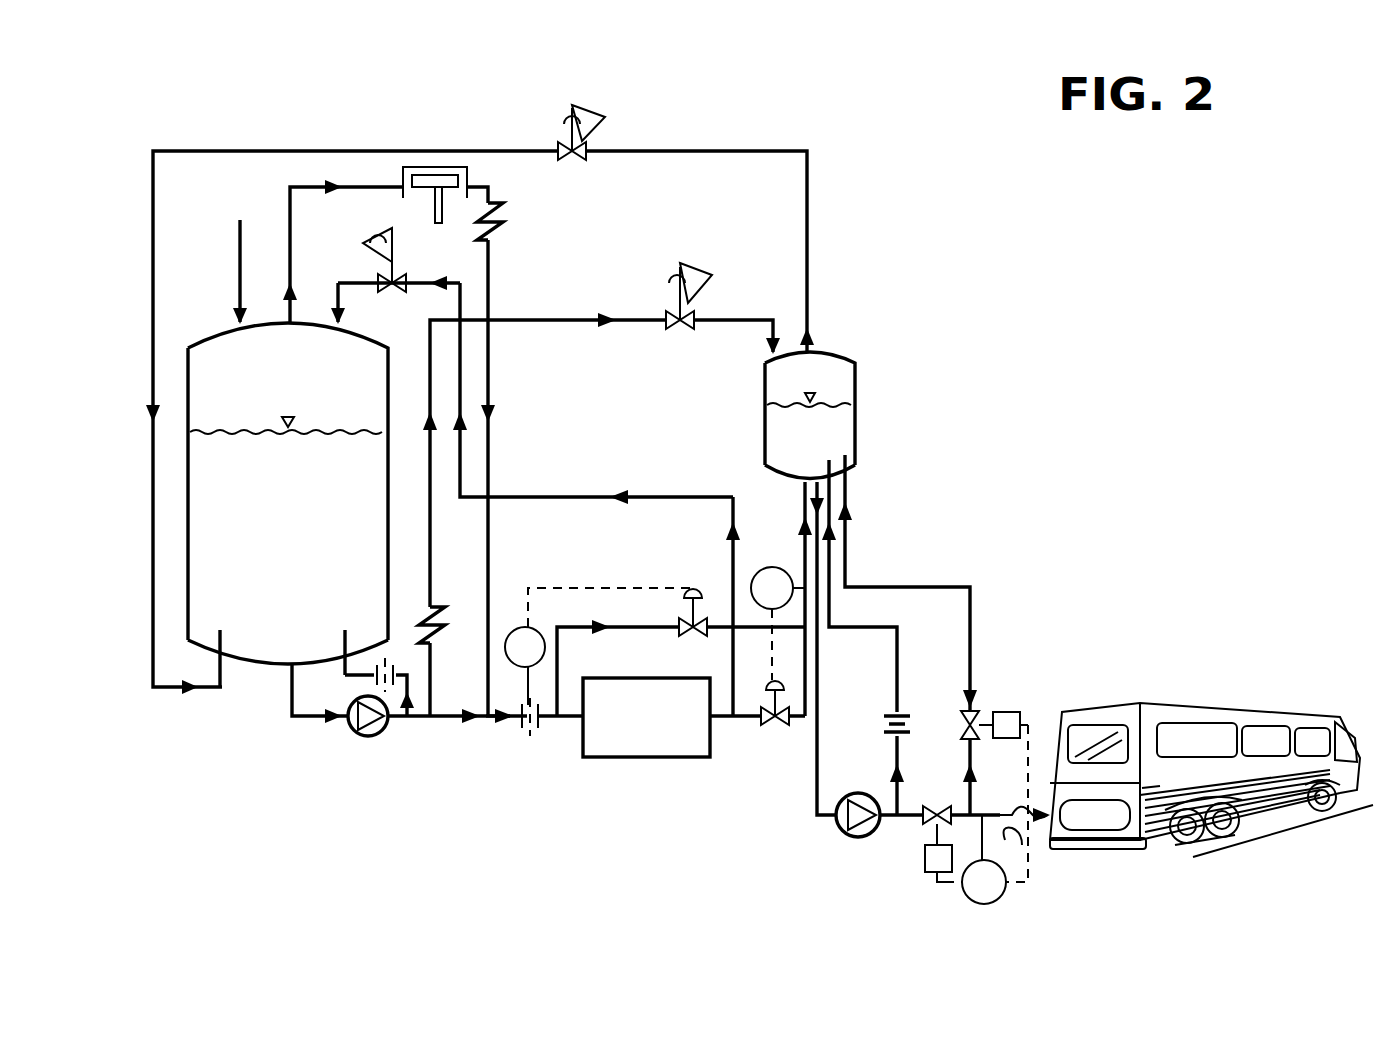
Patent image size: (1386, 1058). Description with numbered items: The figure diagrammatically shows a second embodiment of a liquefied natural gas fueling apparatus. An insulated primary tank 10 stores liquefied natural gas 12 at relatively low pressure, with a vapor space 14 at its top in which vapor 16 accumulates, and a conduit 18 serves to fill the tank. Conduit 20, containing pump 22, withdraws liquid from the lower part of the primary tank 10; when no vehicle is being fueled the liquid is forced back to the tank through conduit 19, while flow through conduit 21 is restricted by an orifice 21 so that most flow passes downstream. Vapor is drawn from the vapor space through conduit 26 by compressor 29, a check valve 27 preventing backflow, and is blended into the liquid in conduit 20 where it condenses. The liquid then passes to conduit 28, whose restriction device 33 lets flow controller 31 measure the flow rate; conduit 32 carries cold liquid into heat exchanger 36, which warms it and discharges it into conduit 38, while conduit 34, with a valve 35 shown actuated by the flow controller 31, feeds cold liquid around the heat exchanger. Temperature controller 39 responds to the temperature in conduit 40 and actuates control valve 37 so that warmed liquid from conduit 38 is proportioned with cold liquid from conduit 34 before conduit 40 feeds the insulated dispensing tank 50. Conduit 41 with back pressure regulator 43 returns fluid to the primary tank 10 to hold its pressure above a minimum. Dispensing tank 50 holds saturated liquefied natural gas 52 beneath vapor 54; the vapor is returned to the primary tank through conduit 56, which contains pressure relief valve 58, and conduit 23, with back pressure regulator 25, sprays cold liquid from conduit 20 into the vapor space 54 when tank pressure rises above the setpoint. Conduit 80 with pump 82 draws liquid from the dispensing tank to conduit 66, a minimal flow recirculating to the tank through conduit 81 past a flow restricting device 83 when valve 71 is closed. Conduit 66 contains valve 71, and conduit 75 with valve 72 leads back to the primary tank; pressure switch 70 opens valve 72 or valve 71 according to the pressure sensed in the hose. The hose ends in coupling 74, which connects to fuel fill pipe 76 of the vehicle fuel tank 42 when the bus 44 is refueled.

The primary tank 10 is at (390, 518).
The liquefied natural gas 12 is at (293, 534).
The vapor space 14 is at (218, 345).
The vapor 16 is at (301, 379).
The conduit 18 is at (240, 268).
The conduit 19 is at (398, 676).
The conduit 20 is at (453, 708).
The orifice 21 is at (383, 660).
The pump 22 is at (362, 740).
The conduit 23 is at (436, 578).
The back pressure regulator 25 is at (668, 310).
The conduit 26 is at (390, 185).
The check valve 27 is at (497, 220).
The conduit 28 is at (498, 728).
The compressor 29 is at (470, 160).
The flow controller 31 is at (523, 626).
The conduit 32 is at (572, 718).
The restriction device 33 is at (517, 699).
The conduit 34 is at (585, 627).
The bypass valve 35 is at (698, 620).
The heat exchanger 36 is at (663, 758).
The control valve 37 is at (780, 735).
The conduit 38 is at (714, 682).
The temperature controller 39 is at (757, 575).
The conduit 40 is at (803, 552).
The conduit 41 is at (550, 497).
The vehicle fuel tank 42 is at (1212, 832).
The back pressure regulator 43 is at (402, 276).
The bus 44 is at (1215, 702).
The dispensing tank 50 is at (765, 385).
The liquefied natural gas 52 is at (820, 448).
The vapor 54 is at (825, 386).
The conduit 56 is at (432, 151).
The pressure relief valve 58 is at (585, 146).
The conduit 66 is at (908, 818).
The pressure switch 70 is at (968, 900).
The valve 71 is at (925, 800).
The valve 72 is at (978, 712).
The coupling 74 is at (1048, 812).
The conduit 75 is at (972, 629).
The fuel fill pipe 76 is at (1145, 786).
The conduit 80 is at (820, 680).
The conduit 81 is at (898, 662).
The pump 82 is at (850, 836).
The flow restrictor 83 is at (905, 725).